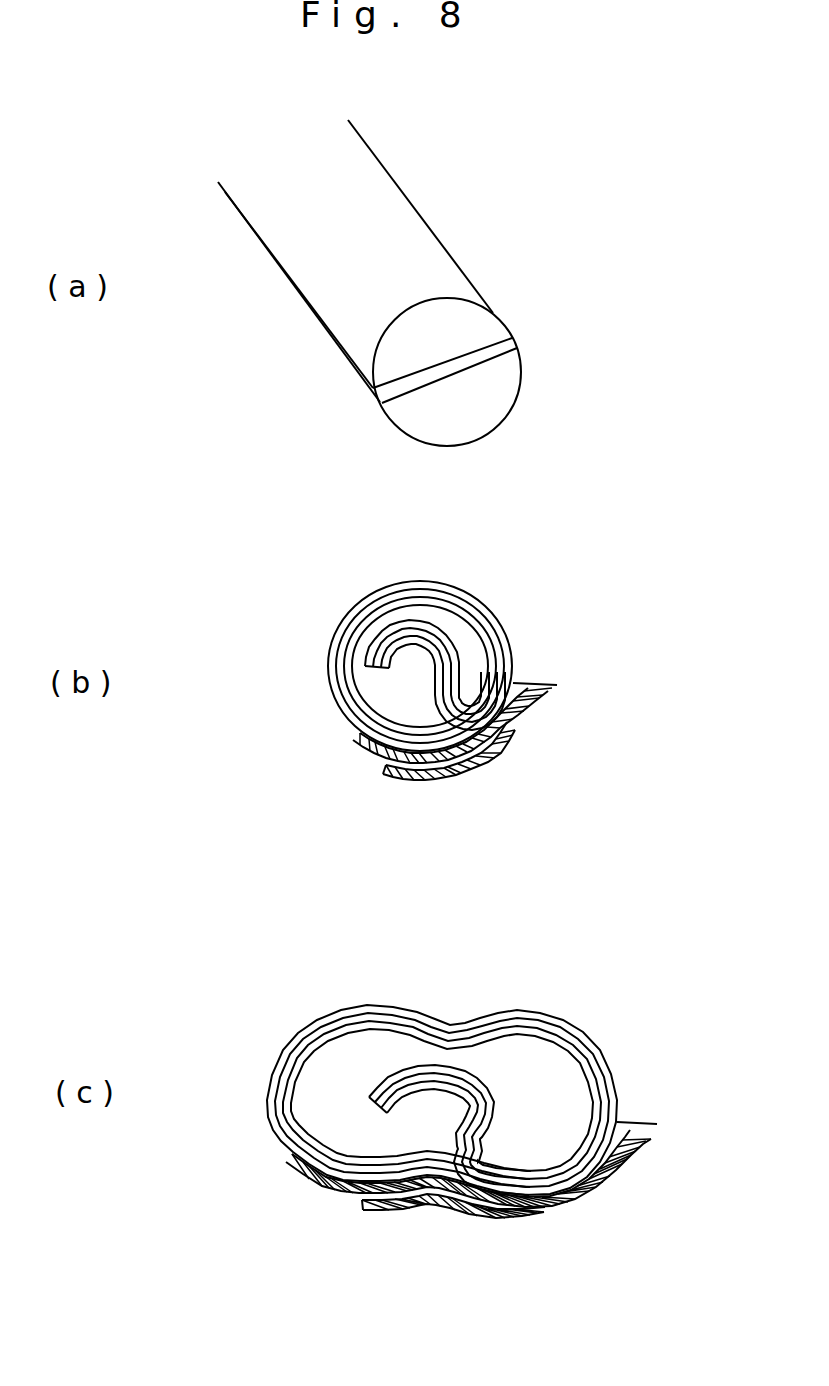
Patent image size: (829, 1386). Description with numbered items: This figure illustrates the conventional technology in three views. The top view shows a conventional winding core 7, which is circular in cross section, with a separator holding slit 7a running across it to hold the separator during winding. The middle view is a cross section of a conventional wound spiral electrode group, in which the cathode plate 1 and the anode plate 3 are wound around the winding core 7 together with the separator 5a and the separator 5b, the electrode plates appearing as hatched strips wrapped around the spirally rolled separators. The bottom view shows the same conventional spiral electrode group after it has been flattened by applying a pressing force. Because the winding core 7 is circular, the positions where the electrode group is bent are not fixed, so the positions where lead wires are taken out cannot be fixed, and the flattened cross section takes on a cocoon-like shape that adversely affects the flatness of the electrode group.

The winding core 7 is at (448, 320).
The separator holding slit 7a is at (490, 353).
The separator 5a is at (358, 735).
The separator 5b is at (438, 768).
The cathode plate 1 is at (498, 770).
The anode plate 3 is at (537, 736).